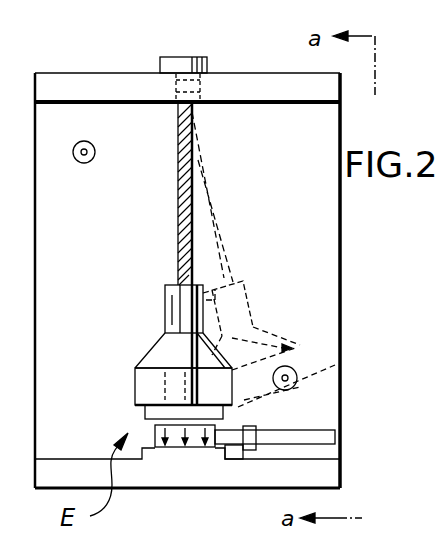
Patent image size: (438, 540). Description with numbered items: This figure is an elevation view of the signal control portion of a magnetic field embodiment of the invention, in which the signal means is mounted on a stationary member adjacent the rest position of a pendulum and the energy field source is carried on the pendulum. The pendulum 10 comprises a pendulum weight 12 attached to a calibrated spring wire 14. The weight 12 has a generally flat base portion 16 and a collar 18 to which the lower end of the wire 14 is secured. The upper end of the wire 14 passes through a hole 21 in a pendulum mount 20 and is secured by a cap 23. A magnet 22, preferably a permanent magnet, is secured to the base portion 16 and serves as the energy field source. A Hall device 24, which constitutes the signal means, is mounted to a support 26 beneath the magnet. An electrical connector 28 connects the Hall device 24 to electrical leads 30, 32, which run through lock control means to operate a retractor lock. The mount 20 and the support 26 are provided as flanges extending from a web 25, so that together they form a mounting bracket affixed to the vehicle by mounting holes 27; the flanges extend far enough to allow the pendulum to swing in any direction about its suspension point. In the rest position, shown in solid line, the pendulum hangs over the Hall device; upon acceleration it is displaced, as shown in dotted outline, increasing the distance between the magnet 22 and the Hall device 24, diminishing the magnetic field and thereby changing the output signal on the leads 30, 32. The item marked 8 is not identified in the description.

The resilient mounting member 8 is at (158, 428).
The pendulum 10 is at (160, 281).
The pendulum weight 12 is at (273, 357).
The calibrated spring wire 14 is at (185, 176).
The base portion 16 is at (183, 373).
The collar 18 is at (232, 290).
The pendulum mount 20 is at (260, 93).
The hole 21 is at (204, 106).
The magnet 22 is at (138, 408).
The cap 23 is at (190, 62).
The Hall device 24 is at (208, 450).
The web 25 is at (271, 184).
The support 26 is at (172, 450).
The mounting holes 27 is at (78, 160).
The electrical connector 28 is at (232, 469).
The electrical lead 30 is at (308, 440).
The electrical lead 32 is at (308, 446).